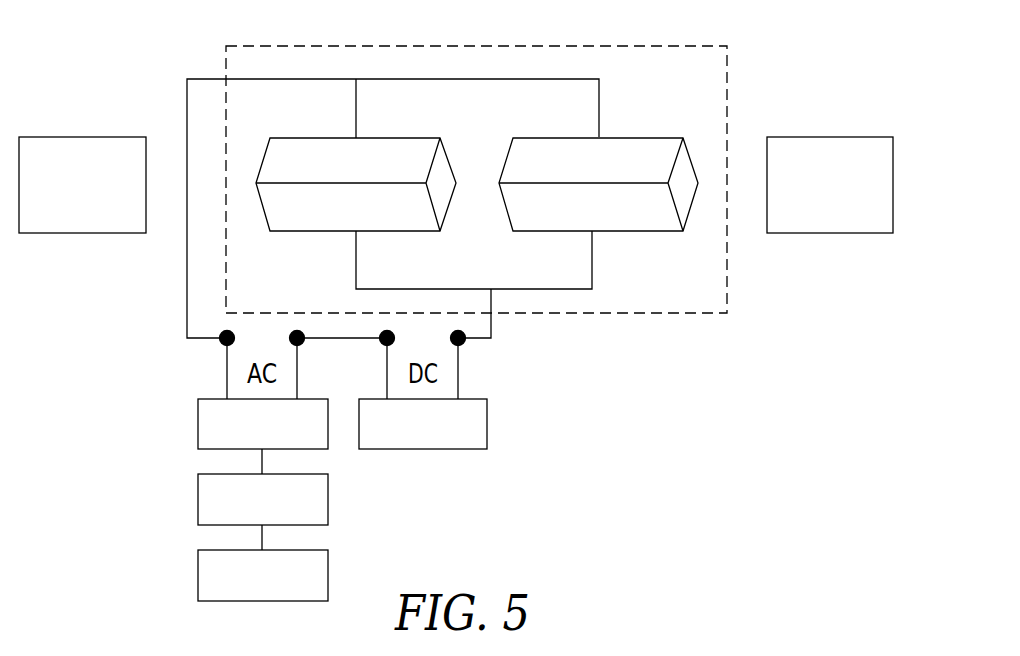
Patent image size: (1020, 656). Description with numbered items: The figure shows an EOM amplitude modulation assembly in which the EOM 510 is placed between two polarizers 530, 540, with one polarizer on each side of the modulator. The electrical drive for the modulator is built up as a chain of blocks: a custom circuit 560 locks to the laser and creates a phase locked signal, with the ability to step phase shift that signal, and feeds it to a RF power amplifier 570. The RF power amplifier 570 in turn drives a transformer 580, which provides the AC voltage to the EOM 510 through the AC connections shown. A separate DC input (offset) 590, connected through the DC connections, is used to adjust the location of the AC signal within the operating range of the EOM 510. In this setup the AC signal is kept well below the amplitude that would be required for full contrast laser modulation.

The EOM 510 is at (294, 35).
The polarizer 530 is at (82, 137).
The polarizer 540 is at (835, 137).
The custom circuit 560 is at (197, 576).
The RF power amplifier 570 is at (197, 500).
The transformer 580 is at (197, 423).
The DC input (offset) 590 is at (488, 423).